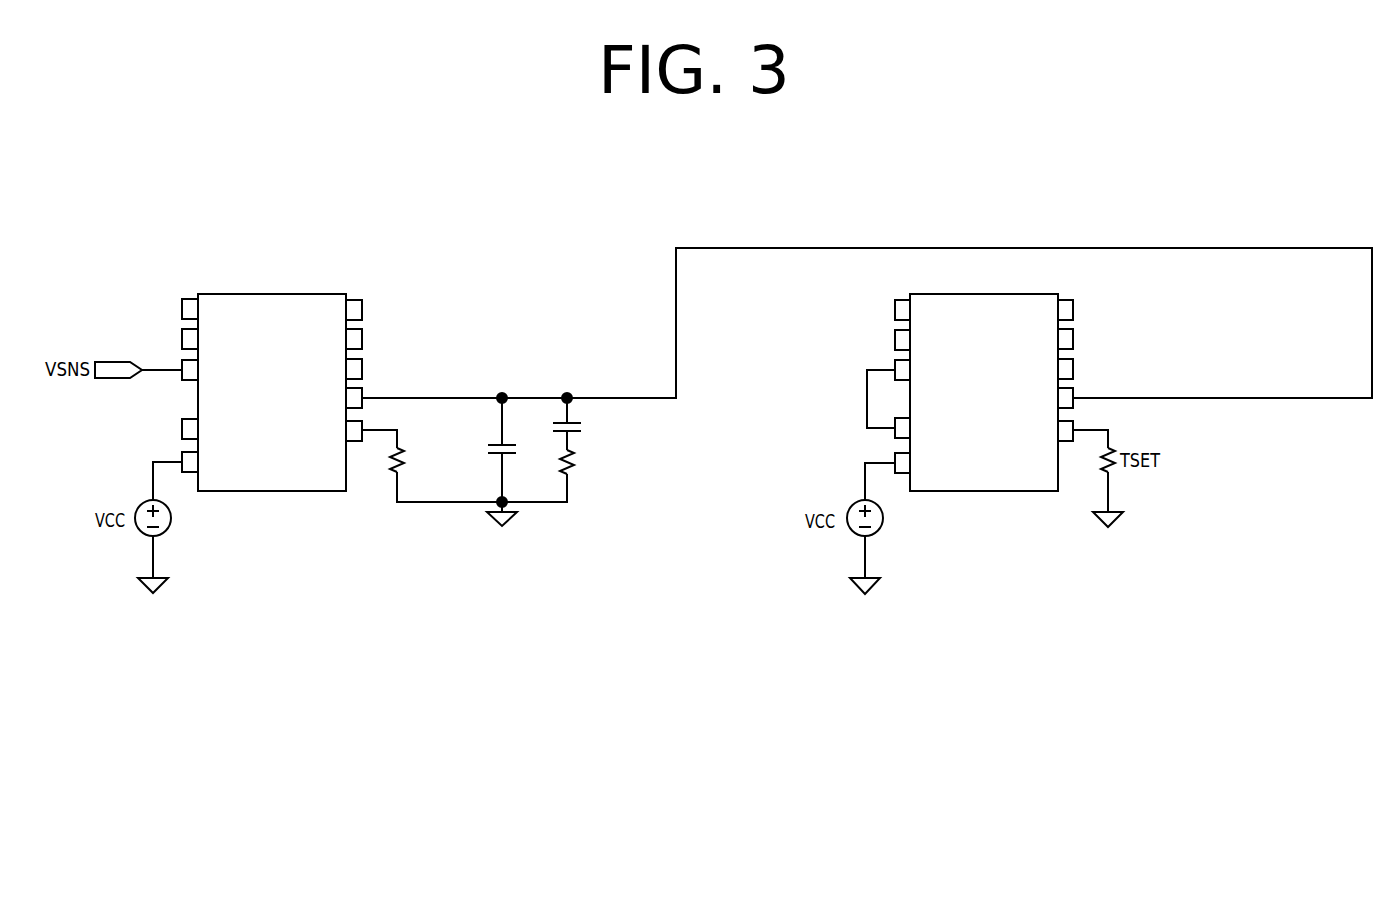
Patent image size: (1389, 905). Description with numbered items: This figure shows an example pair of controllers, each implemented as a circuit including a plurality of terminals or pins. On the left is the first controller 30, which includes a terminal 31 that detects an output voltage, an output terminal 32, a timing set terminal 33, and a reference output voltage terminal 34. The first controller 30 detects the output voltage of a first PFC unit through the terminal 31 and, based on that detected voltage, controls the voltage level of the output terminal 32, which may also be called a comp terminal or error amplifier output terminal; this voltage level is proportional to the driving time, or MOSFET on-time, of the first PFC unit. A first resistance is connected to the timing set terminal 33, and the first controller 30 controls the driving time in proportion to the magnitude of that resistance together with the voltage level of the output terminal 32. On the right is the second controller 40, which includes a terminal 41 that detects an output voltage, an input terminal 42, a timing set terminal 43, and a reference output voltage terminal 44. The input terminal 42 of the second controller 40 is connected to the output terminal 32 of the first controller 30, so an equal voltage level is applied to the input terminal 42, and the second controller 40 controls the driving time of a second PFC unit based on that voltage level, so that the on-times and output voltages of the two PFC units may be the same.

The first controller 30 is at (310, 492).
The terminal that detects an output voltage 31 is at (181, 362).
The output terminal 32 is at (364, 391).
The timing set terminal 33 is at (356, 442).
The reference output voltage terminal 34 is at (182, 428).
The second controller 40 is at (998, 492).
The terminal that detects an output voltage 41 is at (893, 362).
The input terminal 42 is at (1075, 391).
The timing set terminal 43 is at (1067, 442).
The reference output voltage terminal 44 is at (893, 434).